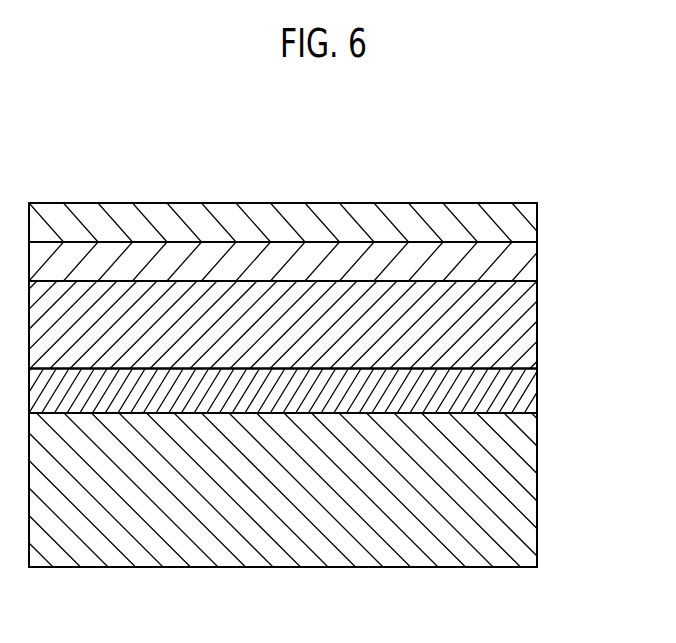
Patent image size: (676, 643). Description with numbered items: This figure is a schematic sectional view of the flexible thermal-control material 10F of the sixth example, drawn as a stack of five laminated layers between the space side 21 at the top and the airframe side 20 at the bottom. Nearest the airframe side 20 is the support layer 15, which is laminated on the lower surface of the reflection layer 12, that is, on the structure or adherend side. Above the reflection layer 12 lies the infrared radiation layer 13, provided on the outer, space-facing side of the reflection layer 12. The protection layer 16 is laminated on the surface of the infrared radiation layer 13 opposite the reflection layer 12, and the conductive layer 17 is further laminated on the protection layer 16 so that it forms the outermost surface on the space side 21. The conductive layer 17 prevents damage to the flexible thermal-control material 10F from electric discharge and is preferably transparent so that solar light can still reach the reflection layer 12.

The flexible thermal-control material 10F is at (522, 138).
The conductive layer 17 is at (525, 224).
The protection layer 16 is at (527, 261).
The infrared radiation layer 13 is at (528, 315).
The reflection layer 12 is at (527, 400).
The support layer 15 is at (527, 492).
The space side 21 is at (283, 179).
The airframe side 20 is at (283, 588).